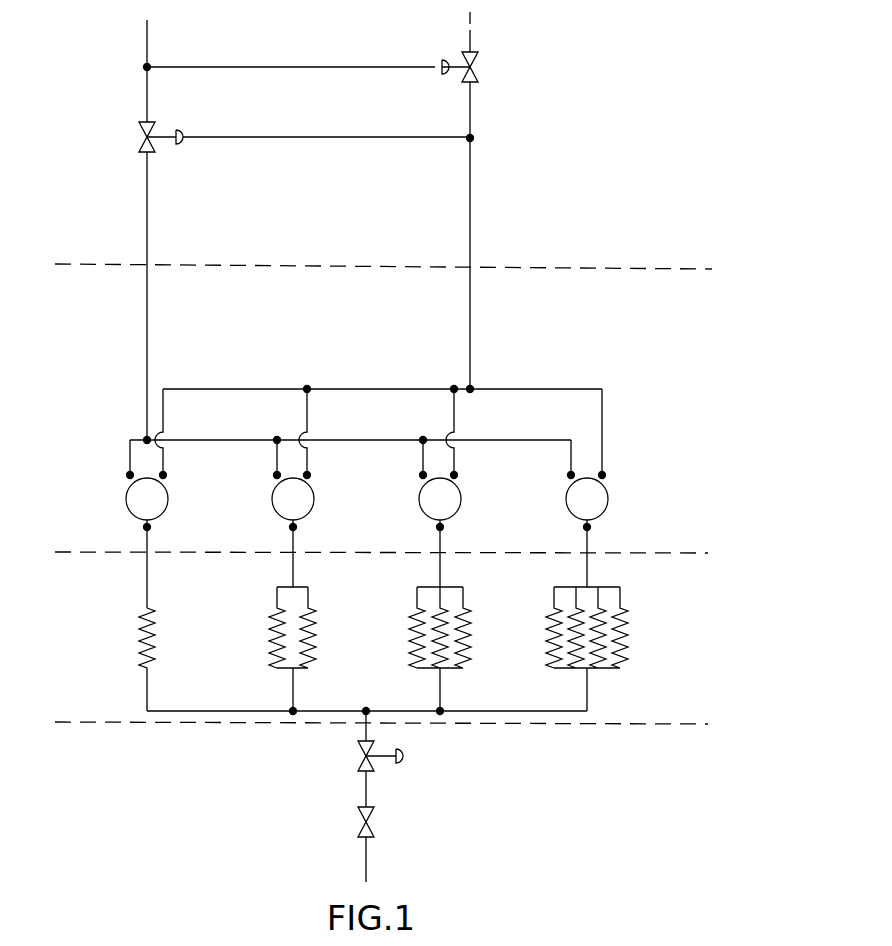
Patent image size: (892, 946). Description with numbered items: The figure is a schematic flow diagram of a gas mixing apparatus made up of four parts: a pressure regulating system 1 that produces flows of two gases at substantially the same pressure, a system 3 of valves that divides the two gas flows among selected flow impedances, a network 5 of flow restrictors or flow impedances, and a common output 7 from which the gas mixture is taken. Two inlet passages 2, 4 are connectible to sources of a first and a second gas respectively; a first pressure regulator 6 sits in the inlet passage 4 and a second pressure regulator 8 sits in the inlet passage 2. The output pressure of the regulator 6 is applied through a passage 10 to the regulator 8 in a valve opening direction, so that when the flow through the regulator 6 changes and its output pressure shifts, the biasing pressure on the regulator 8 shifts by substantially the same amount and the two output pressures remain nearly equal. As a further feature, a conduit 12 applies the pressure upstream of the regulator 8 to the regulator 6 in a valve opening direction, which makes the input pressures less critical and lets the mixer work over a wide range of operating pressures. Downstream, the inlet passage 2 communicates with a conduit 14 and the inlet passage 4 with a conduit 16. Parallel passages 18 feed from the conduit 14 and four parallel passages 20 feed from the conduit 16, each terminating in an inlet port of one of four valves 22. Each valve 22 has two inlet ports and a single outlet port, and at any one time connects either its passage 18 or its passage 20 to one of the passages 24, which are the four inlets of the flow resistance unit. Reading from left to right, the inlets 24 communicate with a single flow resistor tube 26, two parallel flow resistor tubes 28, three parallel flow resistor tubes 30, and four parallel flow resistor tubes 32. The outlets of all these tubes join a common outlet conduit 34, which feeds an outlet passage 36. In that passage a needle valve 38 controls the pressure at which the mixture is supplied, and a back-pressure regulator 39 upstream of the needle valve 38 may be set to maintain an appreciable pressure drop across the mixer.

The pressure regulating system 1 is at (646, 125).
The inlet passage 2 is at (146, 219).
The system of valves 3 is at (646, 403).
The inlet passage 4 is at (472, 216).
The network of flow restrictors 5 is at (646, 630).
The first pressure regulator 6 is at (479, 70).
The common output 7 is at (646, 790).
The second pressure regulator 8 is at (140, 139).
The passage 10 is at (321, 137).
The conduit 12 is at (284, 66).
The conduit 14 is at (510, 440).
The conduit 16 is at (518, 388).
The passages 18 is at (130, 449).
The passages 20 is at (305, 410).
The valve 22 is at (126, 500).
The inlet 24 is at (148, 575).
The single flow resistor tube 26 is at (140, 640).
The flow resistor tubes 28 is at (281, 648).
The flow resistor tubes 30 is at (458, 657).
The flow resistor tubes 32 is at (577, 655).
The common outlet conduit 34 is at (503, 713).
The outlet passage 36 is at (364, 731).
The needle valve 38 is at (357, 824).
The back-pressure regulator 39 is at (357, 765).